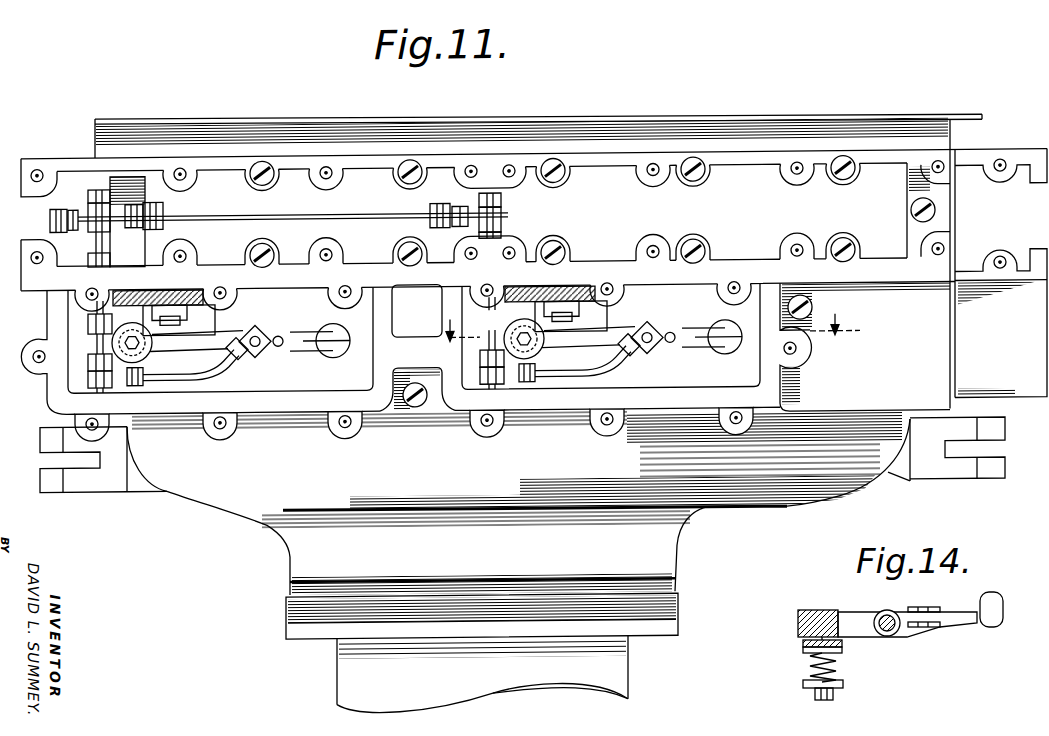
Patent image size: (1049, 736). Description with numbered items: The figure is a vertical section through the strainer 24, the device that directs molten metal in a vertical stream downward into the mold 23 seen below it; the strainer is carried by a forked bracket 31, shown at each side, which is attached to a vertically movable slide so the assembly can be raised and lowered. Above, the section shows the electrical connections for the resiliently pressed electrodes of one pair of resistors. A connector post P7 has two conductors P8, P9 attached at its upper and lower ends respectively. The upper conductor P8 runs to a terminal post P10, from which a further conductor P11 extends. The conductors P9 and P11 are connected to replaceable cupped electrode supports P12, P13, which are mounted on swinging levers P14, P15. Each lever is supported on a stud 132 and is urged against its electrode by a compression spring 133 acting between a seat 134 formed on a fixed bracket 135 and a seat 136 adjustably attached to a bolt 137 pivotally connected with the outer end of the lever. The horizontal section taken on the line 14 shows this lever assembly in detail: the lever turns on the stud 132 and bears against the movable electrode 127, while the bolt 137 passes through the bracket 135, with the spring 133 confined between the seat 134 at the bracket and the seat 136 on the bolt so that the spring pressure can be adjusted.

In FIG. 11, the connector post P7 is at (98, 258).
In FIG. 11, the conductor P8 is at (207, 220).
In FIG. 11, the conductor P9 is at (175, 390).
In FIG. 11, the terminal post P10 is at (500, 242).
In FIG. 11, the conductor P11 is at (581, 387).
In FIG. 11, the cupped electrode support P12 is at (336, 356).
In FIG. 11, the cupped electrode support P13 is at (725, 356).
In FIG. 11, the swinging lever P14 is at (283, 356).
In FIG. 11, the swinging lever P15 is at (670, 355).
In FIG. 11, the section line 14 is at (645, 338).
In FIG. 11, the mold 23 is at (620, 675).
In FIG. 11, the strainer 24 is at (823, 524).
In FIG. 11, the forked bracket 31 is at (108, 486).
In FIG. 14, the movable electrode 127 is at (997, 596).
In FIG. 11, the stud 132 is at (215, 321).
In FIG. 14, the stud 132 is at (887, 611).
In FIG. 11, the compression spring 133 is at (112, 313).
In FIG. 14, the compression spring 133 is at (810, 667).
In FIG. 14, the seat 134 is at (838, 653).
In FIG. 11, the fixed bracket 135 is at (128, 325).
In FIG. 14, the fixed bracket 135 is at (810, 643).
In FIG. 11, the seat 136 is at (148, 355).
In FIG. 14, the seat 136 is at (807, 688).
In FIG. 14, the bolt 137 is at (836, 699).